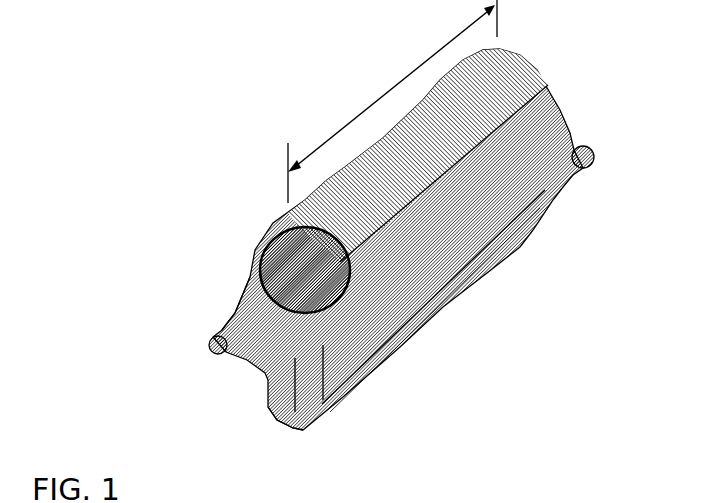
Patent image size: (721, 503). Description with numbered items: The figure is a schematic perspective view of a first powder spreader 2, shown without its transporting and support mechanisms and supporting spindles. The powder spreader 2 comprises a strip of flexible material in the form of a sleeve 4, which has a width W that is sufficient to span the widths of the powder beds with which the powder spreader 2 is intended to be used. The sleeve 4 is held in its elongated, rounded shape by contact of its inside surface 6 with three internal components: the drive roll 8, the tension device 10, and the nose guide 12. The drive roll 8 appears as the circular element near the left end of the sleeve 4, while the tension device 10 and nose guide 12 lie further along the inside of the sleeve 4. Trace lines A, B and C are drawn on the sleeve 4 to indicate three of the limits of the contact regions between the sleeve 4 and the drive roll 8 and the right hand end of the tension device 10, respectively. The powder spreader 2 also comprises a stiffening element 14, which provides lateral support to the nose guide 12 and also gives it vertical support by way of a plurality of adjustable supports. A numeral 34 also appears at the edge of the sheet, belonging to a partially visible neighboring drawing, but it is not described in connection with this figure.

The first powder spreader 2 is at (208, 79).
The sleeve 4 is at (558, 118).
The inside surface 6 is at (250, 288).
The drive roll 8 is at (268, 245).
The tension device 10 is at (210, 341).
The nose guide 12 is at (290, 419).
The stiffening element 14 is at (265, 389).
The element of adjacent figure 34 is at (421, 502).
The trace line A is at (533, 95).
The trace line B is at (562, 178).
The trace line C is at (553, 200).
The width W is at (427, 60).